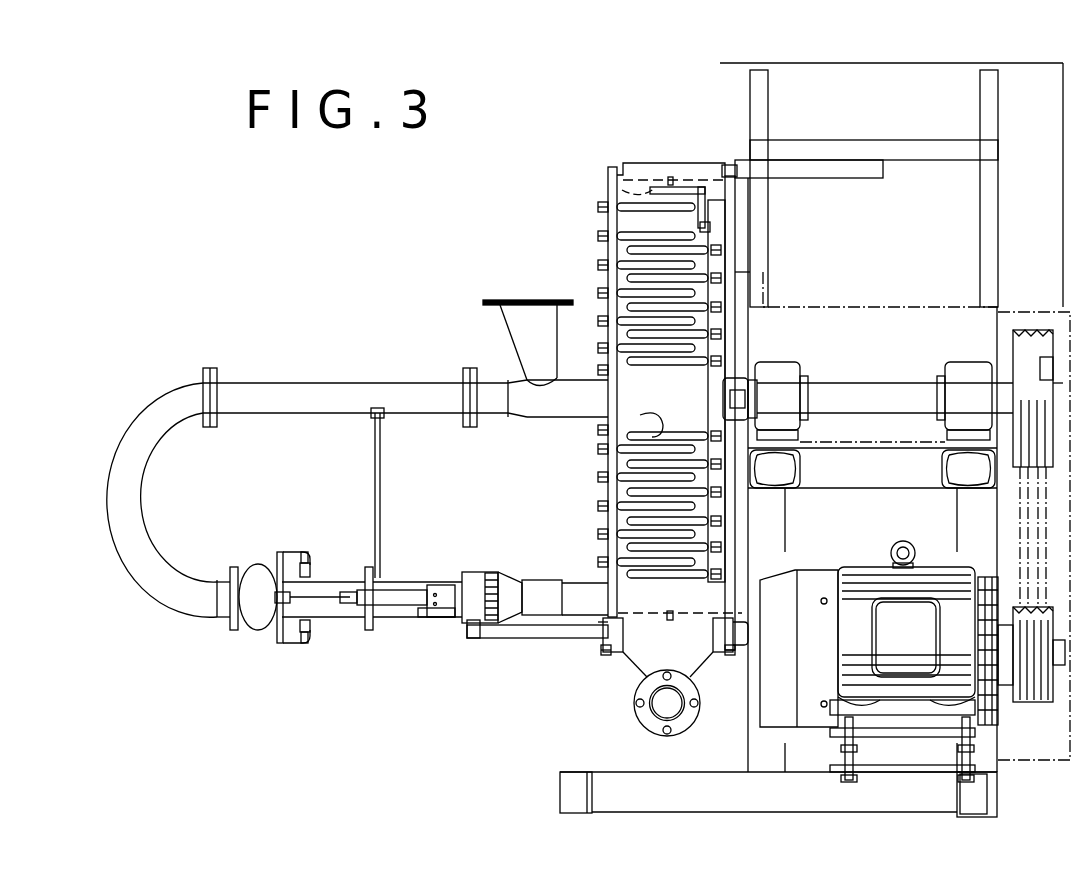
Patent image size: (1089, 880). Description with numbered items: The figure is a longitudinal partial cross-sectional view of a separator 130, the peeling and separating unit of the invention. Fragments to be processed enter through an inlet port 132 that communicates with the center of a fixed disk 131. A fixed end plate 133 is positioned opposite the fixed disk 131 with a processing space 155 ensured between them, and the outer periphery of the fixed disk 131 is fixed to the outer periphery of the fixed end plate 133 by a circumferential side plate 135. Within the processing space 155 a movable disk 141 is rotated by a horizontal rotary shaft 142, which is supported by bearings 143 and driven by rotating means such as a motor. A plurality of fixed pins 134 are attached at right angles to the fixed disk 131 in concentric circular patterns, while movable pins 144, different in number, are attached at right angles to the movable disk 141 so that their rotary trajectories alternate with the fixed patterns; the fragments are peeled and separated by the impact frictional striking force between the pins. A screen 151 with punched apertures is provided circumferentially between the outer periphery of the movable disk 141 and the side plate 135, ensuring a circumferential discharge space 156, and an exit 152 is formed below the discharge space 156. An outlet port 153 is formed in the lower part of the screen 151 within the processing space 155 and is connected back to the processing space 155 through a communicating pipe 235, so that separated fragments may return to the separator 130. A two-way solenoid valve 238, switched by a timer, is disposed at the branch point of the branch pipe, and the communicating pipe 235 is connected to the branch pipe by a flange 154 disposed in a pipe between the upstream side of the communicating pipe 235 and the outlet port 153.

The separator 130 is at (587, 113).
The fixed disk 131 is at (607, 280).
The inlet port 132 is at (523, 335).
The fixed end plate 133 is at (735, 222).
The fixed pins 134 is at (636, 504).
The circumferential side plate 135 is at (681, 160).
The movable disk 141 is at (735, 505).
The horizontal rotary shaft 142 is at (873, 390).
The bearings 143 is at (779, 377).
The movable pins 144 is at (640, 415).
The screen 151 is at (622, 190).
The exit 152 is at (667, 705).
The outlet port 153 is at (600, 620).
The flange 154 is at (258, 630).
The processing space 155 is at (645, 384).
The circumferential discharge space 156 is at (657, 172).
The communicating pipe 235 is at (273, 395).
The two-way solenoid valve 238 is at (443, 590).